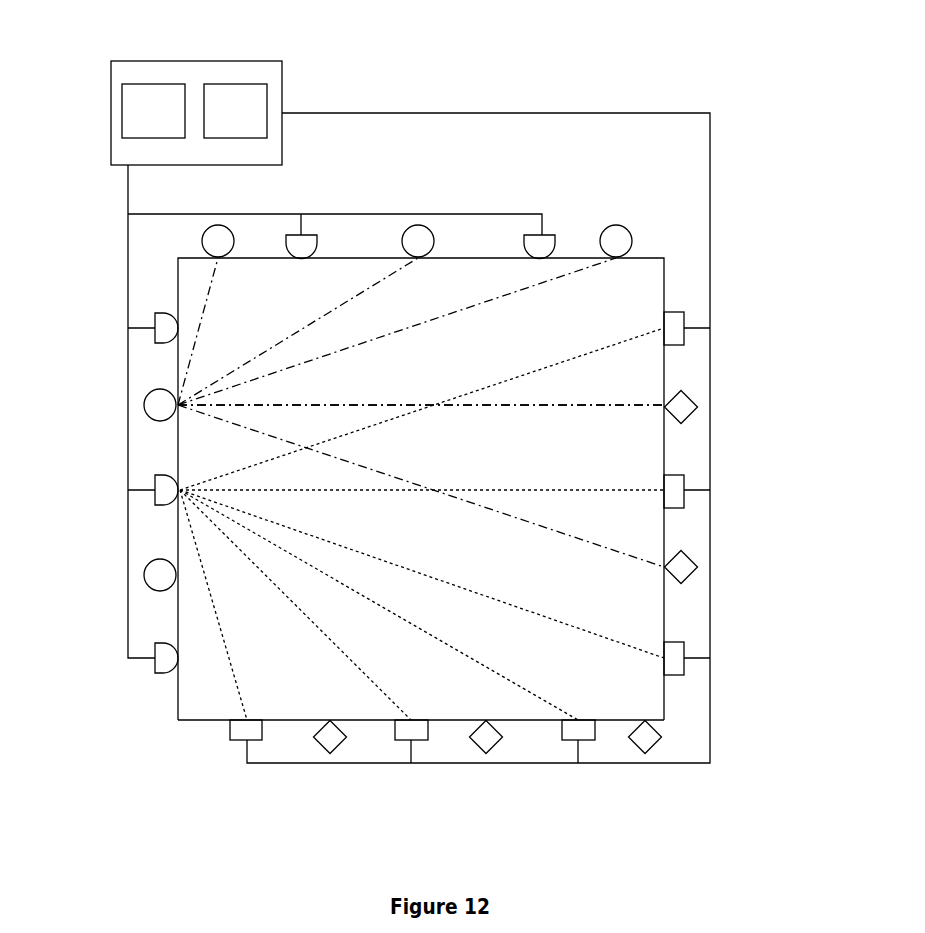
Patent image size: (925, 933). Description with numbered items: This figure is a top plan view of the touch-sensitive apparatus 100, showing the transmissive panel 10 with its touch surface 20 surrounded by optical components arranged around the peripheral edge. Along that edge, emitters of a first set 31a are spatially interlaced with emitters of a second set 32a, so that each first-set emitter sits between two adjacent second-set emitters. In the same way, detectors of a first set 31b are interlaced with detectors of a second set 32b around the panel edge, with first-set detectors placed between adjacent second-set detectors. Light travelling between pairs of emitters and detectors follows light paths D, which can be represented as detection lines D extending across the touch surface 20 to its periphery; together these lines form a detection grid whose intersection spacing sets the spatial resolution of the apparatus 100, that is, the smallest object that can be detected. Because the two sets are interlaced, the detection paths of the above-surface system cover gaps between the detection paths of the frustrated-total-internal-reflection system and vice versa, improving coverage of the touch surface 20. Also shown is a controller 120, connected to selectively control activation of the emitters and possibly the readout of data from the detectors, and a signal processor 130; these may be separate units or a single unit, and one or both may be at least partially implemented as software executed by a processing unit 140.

The touch-sensitive apparatus 100 is at (615, 103).
The processing unit 140 is at (263, 77).
The signal processor 130 is at (153, 111).
The controller 120 is at (235, 111).
The transmissive panel 10 is at (240, 293).
The touch surface 20 is at (635, 705).
The emitters of first set 31a is at (310, 234).
The emitters of second set 32a is at (225, 240).
The detectors of first set 31b is at (682, 645).
The detectors of second set 32b is at (683, 420).
The detection lines D is at (653, 460).